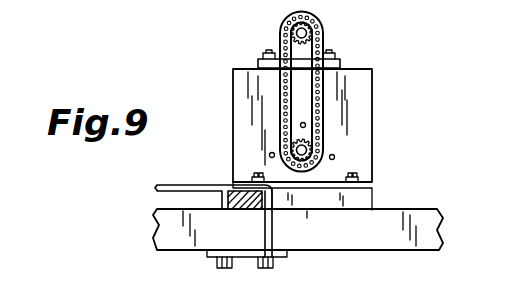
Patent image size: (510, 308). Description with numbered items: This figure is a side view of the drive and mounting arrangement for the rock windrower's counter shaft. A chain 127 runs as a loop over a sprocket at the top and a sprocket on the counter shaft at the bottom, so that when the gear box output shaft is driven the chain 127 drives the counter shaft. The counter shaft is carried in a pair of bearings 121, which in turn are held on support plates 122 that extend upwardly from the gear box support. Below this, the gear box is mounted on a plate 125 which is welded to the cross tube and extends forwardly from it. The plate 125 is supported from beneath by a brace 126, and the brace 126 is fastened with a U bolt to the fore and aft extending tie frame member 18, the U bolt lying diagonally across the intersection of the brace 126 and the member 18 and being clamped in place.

The tie frame member 18 is at (397, 218).
The bearings 121 is at (340, 57).
The support plates 122 is at (358, 89).
The plate 125 is at (173, 186).
The brace 126 is at (230, 183).
The chain 127 is at (325, 41).